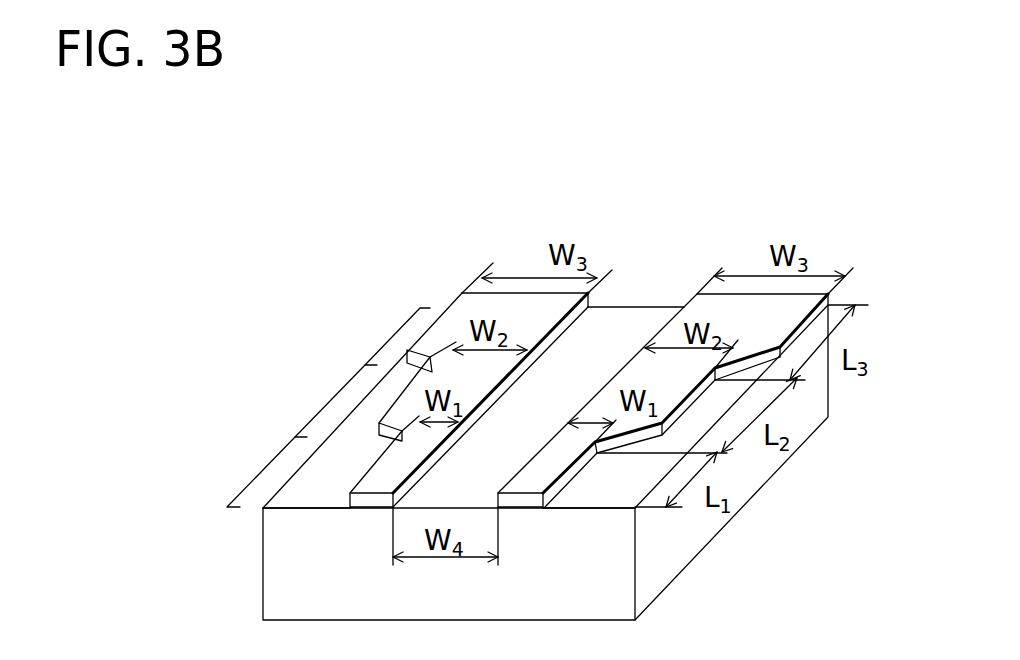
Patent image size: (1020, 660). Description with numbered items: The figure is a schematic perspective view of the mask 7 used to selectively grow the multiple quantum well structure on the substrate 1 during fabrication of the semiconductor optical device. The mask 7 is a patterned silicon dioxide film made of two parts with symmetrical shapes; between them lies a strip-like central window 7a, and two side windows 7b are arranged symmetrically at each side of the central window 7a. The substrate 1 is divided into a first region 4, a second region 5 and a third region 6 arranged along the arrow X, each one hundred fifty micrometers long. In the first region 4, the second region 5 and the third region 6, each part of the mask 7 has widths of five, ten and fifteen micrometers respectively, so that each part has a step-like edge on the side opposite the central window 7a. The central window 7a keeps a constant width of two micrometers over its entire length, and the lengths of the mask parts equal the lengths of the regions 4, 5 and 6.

The substrate 1 is at (287, 595).
The first region 4 is at (264, 472).
The second region 5 is at (336, 401).
The third region 6 is at (397, 333).
The mask 7 is at (517, 308).
The central window 7a is at (630, 322).
The side windows 7b is at (338, 477).